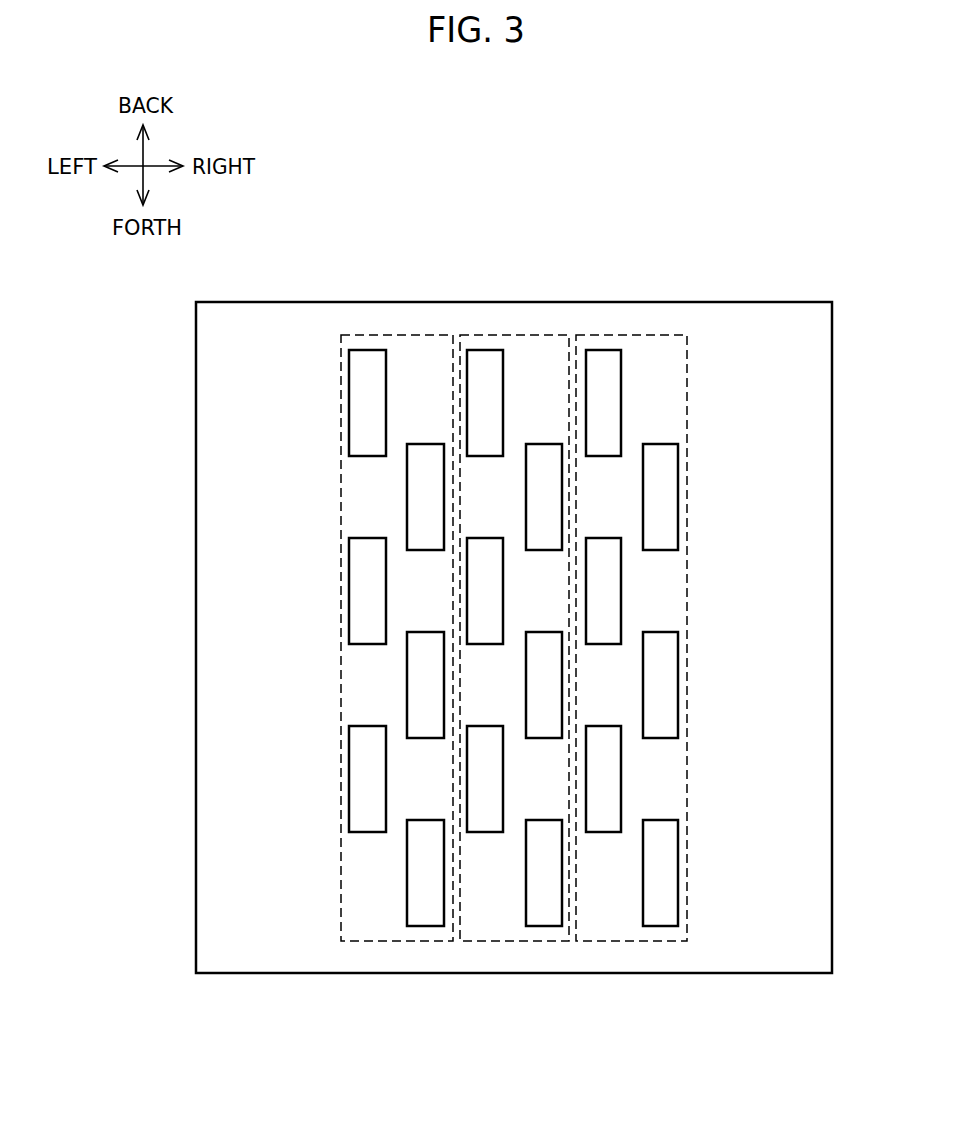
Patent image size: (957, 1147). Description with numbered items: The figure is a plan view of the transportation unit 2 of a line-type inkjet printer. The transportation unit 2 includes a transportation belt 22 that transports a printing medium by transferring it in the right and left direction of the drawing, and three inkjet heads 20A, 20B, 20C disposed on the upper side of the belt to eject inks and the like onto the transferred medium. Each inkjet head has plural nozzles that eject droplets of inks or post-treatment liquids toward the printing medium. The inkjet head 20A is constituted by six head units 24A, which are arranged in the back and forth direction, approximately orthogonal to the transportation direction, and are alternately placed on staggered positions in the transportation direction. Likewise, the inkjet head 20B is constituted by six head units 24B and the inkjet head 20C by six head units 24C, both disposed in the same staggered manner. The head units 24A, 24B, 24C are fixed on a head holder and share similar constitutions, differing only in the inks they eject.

The transportation unit 2 is at (773, 298).
The transportation belt 22 is at (269, 323).
The inkjet head 20A is at (395, 333).
The inkjet head 20B is at (512, 333).
The inkjet head 20C is at (630, 333).
The head units 24A is at (349, 402).
The head units 24B is at (487, 457).
The head units 24C is at (621, 398).